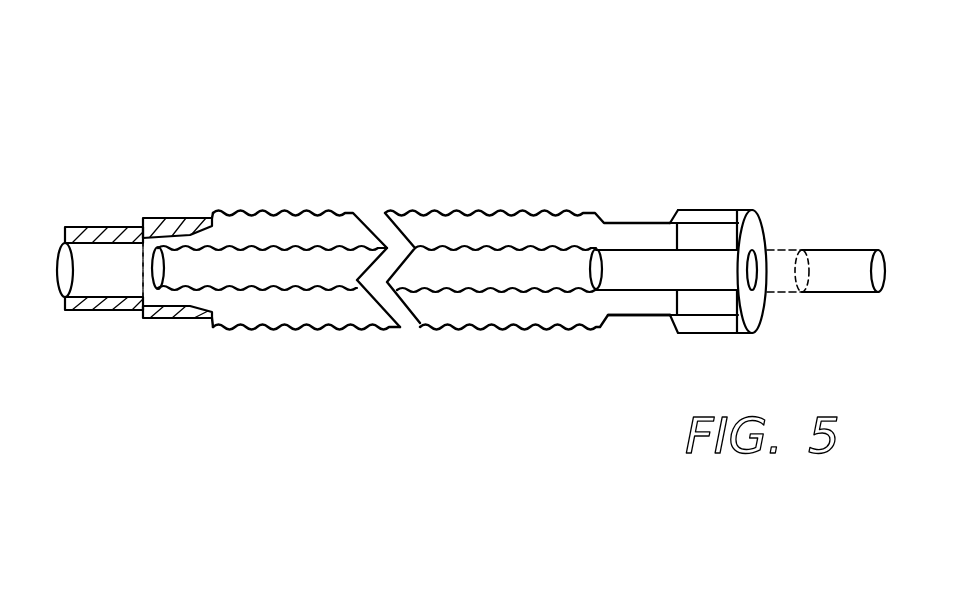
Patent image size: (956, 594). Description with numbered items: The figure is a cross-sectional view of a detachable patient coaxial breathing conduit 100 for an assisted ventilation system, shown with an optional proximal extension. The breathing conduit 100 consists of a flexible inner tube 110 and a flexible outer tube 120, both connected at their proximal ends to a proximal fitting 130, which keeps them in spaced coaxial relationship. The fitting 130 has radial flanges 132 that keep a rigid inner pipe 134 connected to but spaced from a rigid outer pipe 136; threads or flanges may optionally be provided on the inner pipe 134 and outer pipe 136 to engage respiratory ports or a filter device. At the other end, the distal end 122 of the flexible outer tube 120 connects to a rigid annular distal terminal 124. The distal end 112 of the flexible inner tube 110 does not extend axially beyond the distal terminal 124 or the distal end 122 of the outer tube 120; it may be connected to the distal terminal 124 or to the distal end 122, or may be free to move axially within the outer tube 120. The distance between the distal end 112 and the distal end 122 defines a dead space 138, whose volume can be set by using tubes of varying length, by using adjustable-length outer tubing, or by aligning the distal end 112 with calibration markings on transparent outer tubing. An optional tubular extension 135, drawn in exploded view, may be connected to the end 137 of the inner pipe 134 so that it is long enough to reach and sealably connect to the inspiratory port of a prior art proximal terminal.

The breathing conduit 100 is at (573, 152).
The flexible inner tube 110 is at (483, 293).
The distal end of flexible inner tube 112 is at (168, 280).
The flexible outer tube 120 is at (418, 212).
The distal end of flexible outer tube 122 is at (162, 218).
The distal terminal 124 is at (105, 227).
The proximal fitting 130 is at (685, 209).
The radial flanges 132 is at (705, 250).
The inner pipe 134 is at (670, 300).
The tubular extension 135 is at (857, 293).
The outer pipe 136 is at (762, 225).
The end of inner pipe 137 is at (759, 291).
The dead space 138 is at (145, 277).